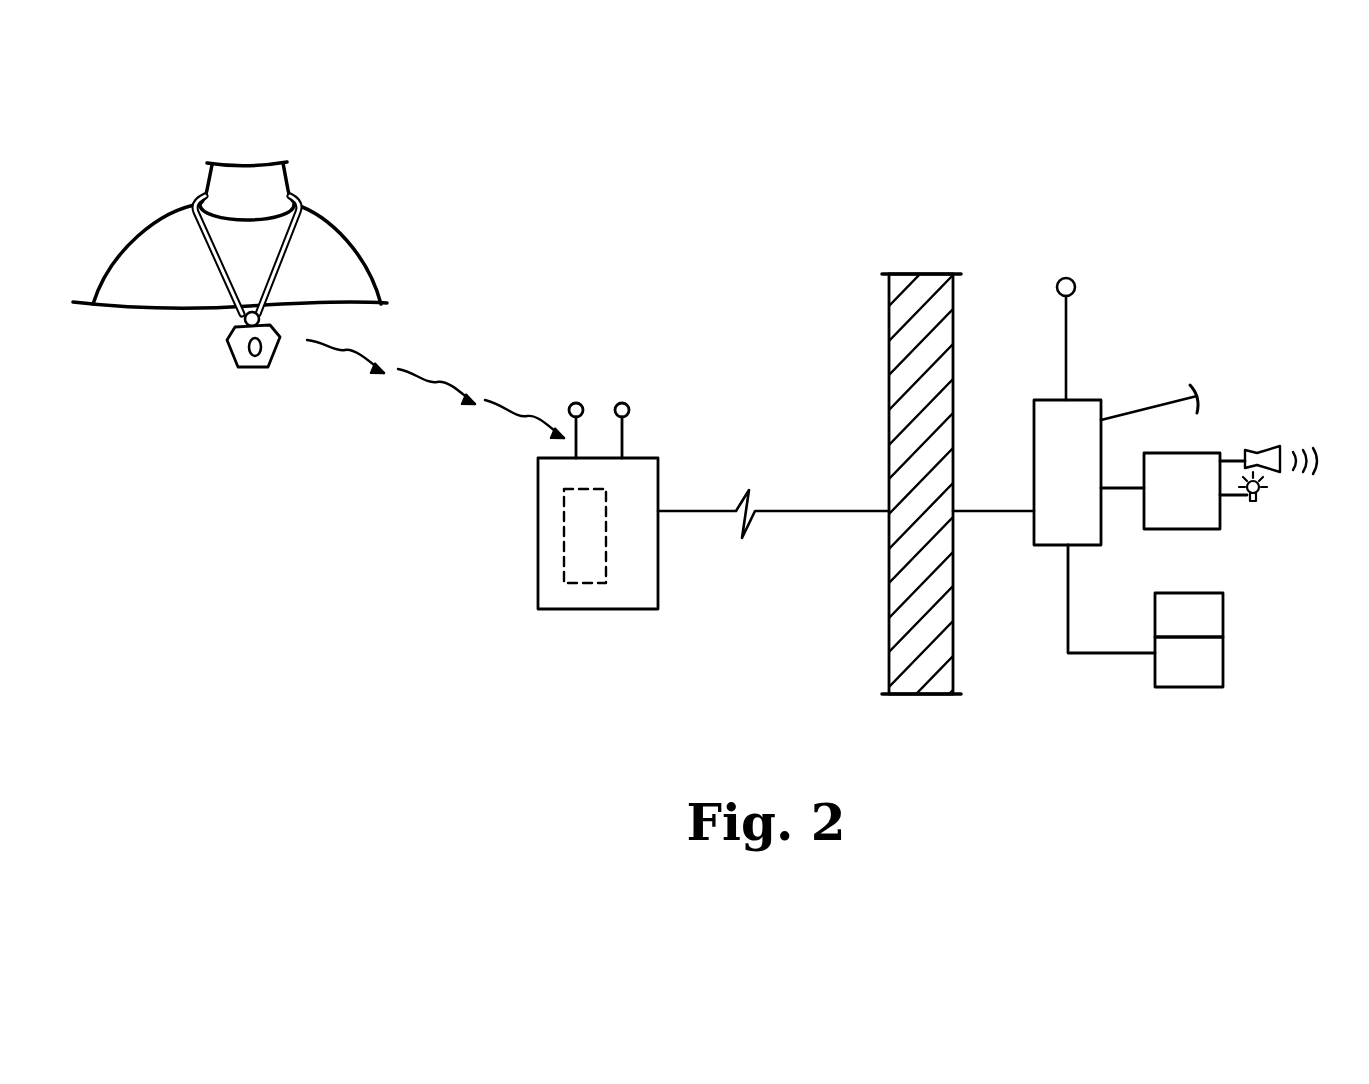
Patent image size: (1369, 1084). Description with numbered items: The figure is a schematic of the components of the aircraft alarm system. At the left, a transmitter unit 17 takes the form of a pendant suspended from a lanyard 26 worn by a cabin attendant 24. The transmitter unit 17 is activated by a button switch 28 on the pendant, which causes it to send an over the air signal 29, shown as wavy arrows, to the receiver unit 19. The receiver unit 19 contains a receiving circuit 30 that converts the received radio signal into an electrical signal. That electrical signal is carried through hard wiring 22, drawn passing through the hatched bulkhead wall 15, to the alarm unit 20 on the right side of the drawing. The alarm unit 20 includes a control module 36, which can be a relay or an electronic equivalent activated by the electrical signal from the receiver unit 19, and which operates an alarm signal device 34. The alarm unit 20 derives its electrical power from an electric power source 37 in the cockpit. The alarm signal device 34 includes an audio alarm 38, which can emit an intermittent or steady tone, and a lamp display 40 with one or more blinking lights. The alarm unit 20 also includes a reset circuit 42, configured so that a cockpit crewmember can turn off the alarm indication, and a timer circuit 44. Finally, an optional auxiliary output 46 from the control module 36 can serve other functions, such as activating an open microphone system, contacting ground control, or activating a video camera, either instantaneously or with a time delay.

The bulkhead wall 15 is at (889, 334).
The transmitter unit 17 is at (250, 373).
The receiver unit 19 is at (601, 614).
The alarm unit 20 is at (1222, 236).
The hard wiring 22 is at (808, 512).
The cabin attendant 24 is at (320, 218).
The lanyard 26 is at (203, 250).
The button switch 28 is at (249, 347).
The over the air signal 29 is at (473, 368).
The receiving circuit 30 is at (538, 559).
The alarm signal device 34 is at (1185, 520).
The control module 36 is at (1082, 400).
The electric power source 37 is at (1063, 320).
The audio alarm 38 is at (1273, 447).
The lamp display 40 is at (1265, 493).
The reset circuit 42 is at (1212, 623).
The timer circuit 44 is at (1190, 677).
The auxiliary output 46 is at (1157, 398).